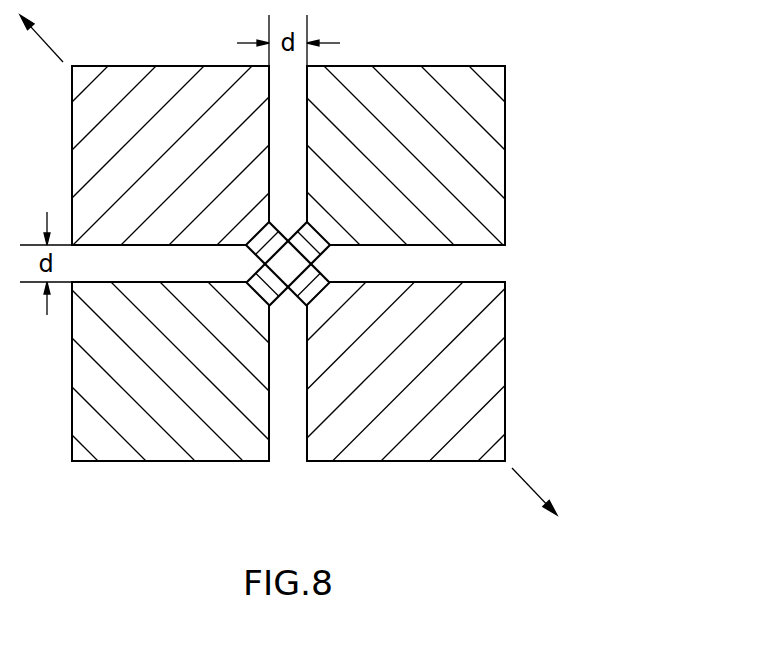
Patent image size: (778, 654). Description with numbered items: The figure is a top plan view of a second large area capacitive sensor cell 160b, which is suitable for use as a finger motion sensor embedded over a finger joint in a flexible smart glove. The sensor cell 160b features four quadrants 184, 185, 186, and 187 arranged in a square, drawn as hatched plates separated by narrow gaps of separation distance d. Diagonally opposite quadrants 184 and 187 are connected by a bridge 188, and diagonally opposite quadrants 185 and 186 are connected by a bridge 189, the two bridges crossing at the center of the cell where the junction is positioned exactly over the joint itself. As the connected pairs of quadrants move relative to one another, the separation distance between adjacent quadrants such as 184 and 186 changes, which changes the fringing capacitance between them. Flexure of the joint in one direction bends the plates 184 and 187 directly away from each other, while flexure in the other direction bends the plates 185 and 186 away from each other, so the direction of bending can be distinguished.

The second large area capacitive sensor cell 160b is at (604, 78).
The quadrant 184 is at (180, 172).
The quadrant 185 is at (414, 172).
The quadrant 186 is at (179, 387).
The quadrant 187 is at (414, 387).
The bridge 188 is at (311, 274).
The bridge 189 is at (273, 288).